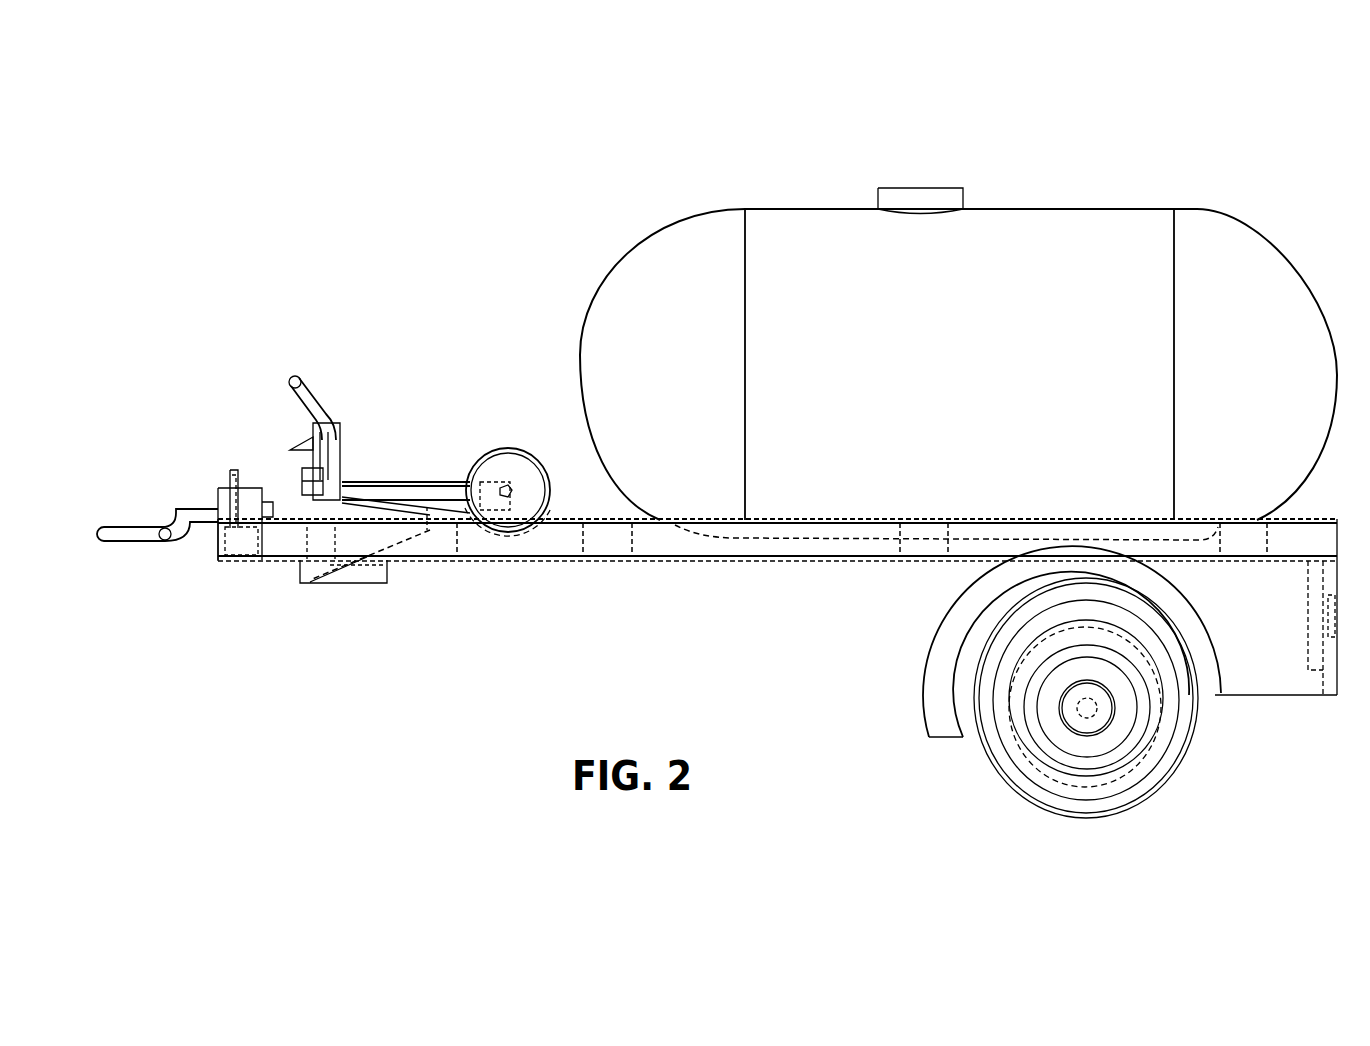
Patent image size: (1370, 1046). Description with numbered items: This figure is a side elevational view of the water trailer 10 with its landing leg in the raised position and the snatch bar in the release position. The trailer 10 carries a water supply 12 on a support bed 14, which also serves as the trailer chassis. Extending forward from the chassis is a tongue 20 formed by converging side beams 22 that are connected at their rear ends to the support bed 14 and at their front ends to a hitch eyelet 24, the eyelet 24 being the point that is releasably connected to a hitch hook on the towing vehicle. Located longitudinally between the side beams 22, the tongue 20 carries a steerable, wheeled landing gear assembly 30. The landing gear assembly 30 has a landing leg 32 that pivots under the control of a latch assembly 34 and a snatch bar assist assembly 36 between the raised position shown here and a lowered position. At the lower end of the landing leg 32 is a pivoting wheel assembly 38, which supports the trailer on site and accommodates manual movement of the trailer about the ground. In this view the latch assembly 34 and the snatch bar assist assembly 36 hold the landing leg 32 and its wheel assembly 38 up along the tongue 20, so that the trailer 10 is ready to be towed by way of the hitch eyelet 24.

The water trailer 10 is at (495, 190).
The water supply 12 is at (667, 228).
The support bed 14 is at (762, 560).
The tongue 20 is at (470, 560).
The side beams 22 is at (423, 552).
The hitch eyelet 24 is at (130, 525).
The landing gear assembly 30 is at (455, 472).
The landing leg 32 is at (473, 455).
The latch assembly 34 is at (293, 478).
The snatch bar assist assembly 36 is at (298, 368).
The pivoting wheel assembly 38 is at (537, 538).